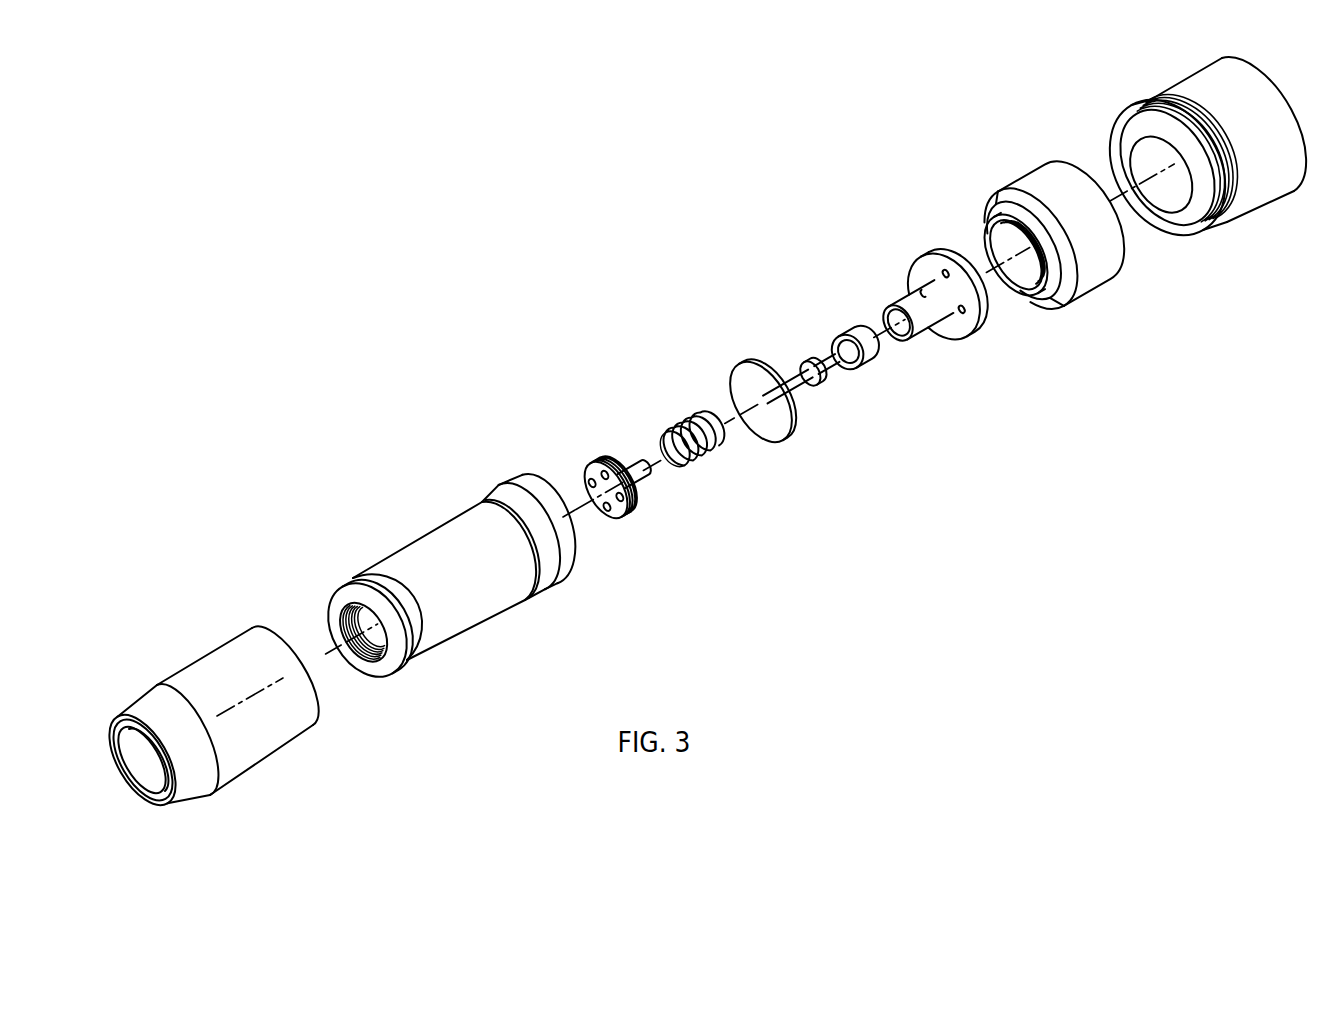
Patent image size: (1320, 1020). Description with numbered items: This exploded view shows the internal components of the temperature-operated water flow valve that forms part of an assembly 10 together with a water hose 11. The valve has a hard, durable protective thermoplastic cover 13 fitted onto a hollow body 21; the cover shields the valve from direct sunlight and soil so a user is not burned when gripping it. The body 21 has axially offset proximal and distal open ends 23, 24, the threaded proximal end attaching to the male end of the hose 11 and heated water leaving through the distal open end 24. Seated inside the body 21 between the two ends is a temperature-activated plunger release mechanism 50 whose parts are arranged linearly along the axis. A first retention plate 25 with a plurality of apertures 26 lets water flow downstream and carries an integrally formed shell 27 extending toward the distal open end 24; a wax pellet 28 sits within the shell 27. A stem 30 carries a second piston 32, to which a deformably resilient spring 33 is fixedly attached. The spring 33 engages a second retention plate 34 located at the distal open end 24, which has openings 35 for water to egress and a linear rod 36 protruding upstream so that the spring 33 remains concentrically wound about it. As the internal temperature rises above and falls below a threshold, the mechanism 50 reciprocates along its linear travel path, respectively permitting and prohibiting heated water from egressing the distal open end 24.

The assembly 10 is at (694, 164).
The water hose 11 is at (1231, 190).
The protective thermoplastic cover 13 is at (267, 732).
The hollow body 21 is at (470, 608).
The proximal open end 23 is at (1102, 267).
The distal open end 24 is at (370, 655).
The first retention plate 25 is at (980, 293).
The apertures 26 is at (966, 312).
The shell 27 is at (933, 316).
The wax pellet 28 is at (866, 358).
The stem 30 is at (799, 375).
The second piston 32 is at (763, 437).
The deformably resilient spring 33 is at (692, 420).
The second retention plate 34 is at (601, 458).
The openings 35 is at (612, 516).
The linear rod 36 is at (647, 477).
The temperature-activated plunger release mechanism 50 is at (628, 471).